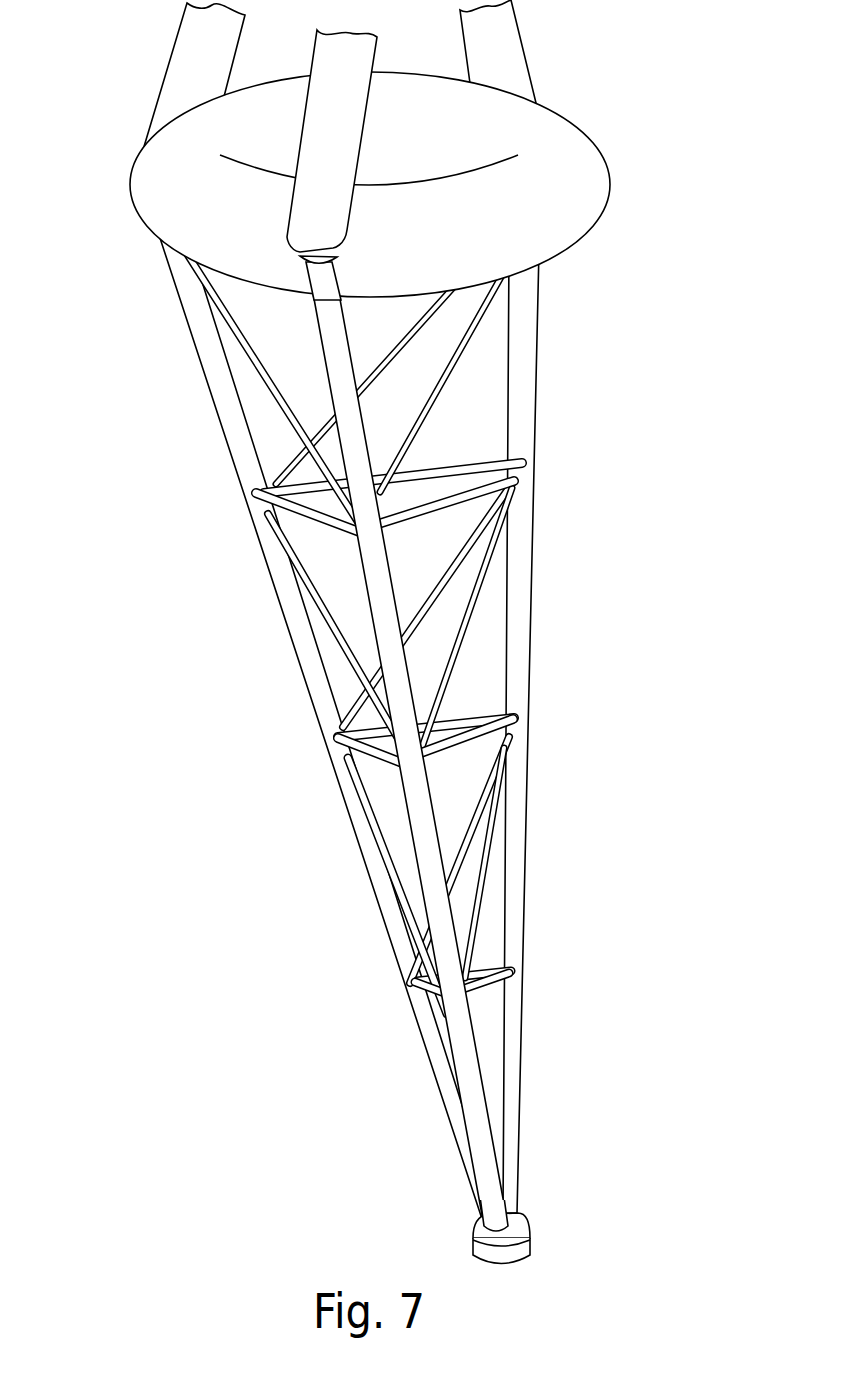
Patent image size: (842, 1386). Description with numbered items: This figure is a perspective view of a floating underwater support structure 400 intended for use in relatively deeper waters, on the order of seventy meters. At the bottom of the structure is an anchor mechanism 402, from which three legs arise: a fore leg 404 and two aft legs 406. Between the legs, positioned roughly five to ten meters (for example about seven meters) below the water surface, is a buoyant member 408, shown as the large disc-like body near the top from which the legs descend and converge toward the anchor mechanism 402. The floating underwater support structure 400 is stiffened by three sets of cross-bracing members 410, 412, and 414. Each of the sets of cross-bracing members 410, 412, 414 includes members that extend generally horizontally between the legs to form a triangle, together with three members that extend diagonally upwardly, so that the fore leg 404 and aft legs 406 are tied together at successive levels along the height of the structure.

The floating underwater support structure 400 is at (321, 632).
The anchor mechanism 402 is at (526, 1250).
The fore leg 404 is at (526, 608).
The aft legs 406 is at (382, 729).
The buoyant member 408 is at (152, 207).
The set of cross-bracing members 410 is at (380, 874).
The set of cross-bracing members 412 is at (316, 640).
The set of cross-bracing members 414 is at (262, 419).